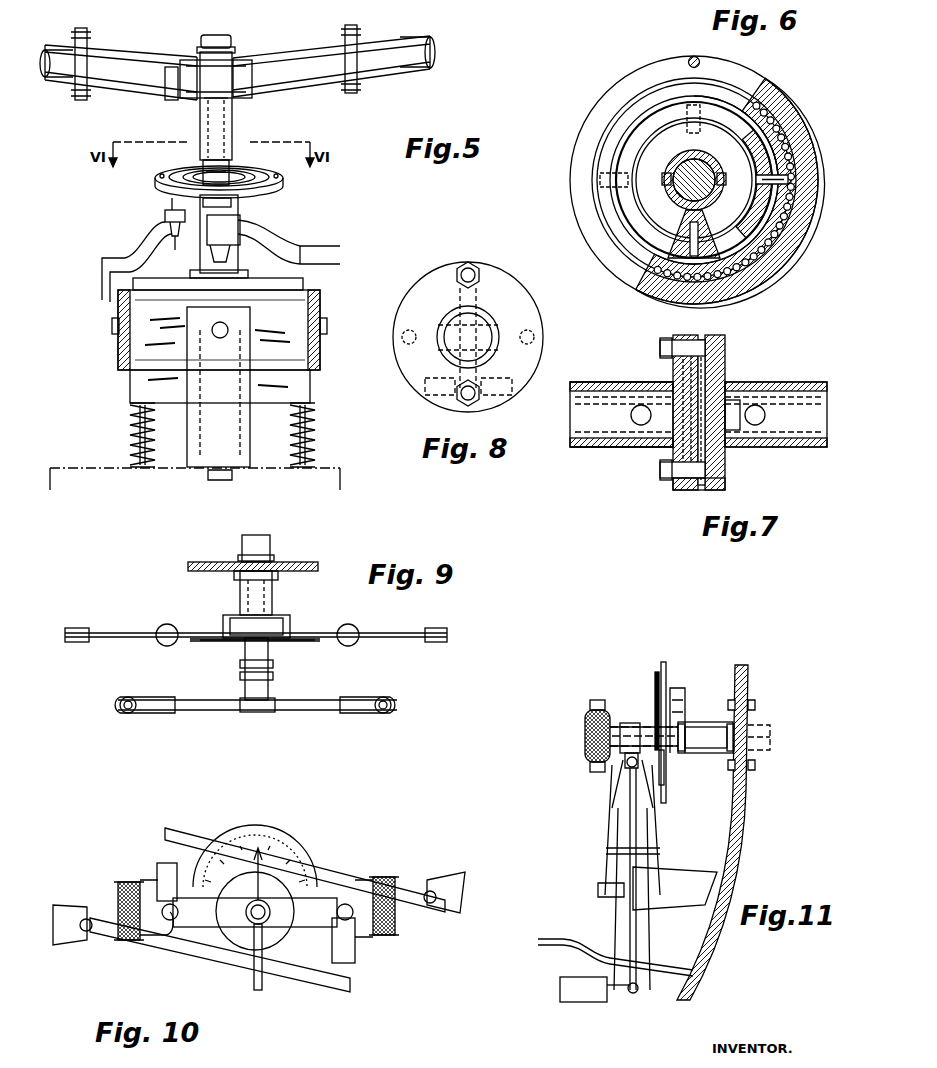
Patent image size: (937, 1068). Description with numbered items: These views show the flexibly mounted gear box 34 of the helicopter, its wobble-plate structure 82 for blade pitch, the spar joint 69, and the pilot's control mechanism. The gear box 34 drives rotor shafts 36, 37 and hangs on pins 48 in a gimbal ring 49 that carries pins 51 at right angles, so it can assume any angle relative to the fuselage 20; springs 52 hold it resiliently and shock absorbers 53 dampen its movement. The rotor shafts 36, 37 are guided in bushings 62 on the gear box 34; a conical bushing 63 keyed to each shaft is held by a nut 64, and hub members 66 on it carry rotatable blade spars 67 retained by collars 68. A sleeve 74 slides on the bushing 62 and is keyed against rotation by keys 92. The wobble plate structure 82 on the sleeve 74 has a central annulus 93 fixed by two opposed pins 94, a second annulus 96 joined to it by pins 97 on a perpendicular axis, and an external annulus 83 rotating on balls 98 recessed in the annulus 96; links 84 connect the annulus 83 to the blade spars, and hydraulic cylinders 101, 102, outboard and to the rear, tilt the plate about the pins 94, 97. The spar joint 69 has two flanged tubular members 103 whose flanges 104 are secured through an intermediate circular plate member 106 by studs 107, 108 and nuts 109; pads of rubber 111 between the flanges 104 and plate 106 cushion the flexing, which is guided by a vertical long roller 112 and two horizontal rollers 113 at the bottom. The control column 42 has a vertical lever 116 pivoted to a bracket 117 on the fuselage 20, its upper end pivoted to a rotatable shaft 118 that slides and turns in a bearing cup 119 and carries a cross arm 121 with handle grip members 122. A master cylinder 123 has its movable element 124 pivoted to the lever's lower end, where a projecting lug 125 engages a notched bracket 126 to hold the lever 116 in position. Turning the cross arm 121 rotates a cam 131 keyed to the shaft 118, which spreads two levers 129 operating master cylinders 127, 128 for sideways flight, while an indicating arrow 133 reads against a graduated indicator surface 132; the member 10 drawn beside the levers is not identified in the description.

In FIG. 9, the cross rod 10 is at (447, 635).
In FIG. 9, the fuselage 20 is at (312, 572).
In FIG. 10, the fuselage 20 is at (446, 884).
In FIG. 11, the fuselage 20 is at (750, 680).
In FIG. 5, the gear box 34 is at (318, 293).
In FIG. 6, the rotor shaft 36 is at (668, 176).
In FIG. 5, the rotor shaft 37 is at (238, 162).
In FIG. 10, the control column 42 is at (264, 988).
In FIG. 11, the control column 42 is at (620, 786).
In FIG. 5, the pins 48 is at (228, 330).
In FIG. 5, the gimbal ring 49 is at (322, 300).
In FIG. 5, the pins 51 is at (326, 322).
In FIG. 5, the springs 52 is at (158, 430).
In FIG. 5, the shock absorbers 53 is at (135, 438).
In FIG. 6, the bushings 62 is at (695, 150).
In FIG. 5, the conical bushing 63 is at (244, 62).
In FIG. 5, the nut 64 is at (233, 48).
In FIG. 5, the hub members 66 is at (118, 92).
In FIG. 5, the blade spars 67 is at (45, 78).
In FIG. 5, the collars 68 is at (78, 100).
In FIG. 7, the spar joint 69 is at (622, 450).
In FIG. 6, the sleeve 74 is at (770, 150).
In FIG. 5, the wobble plate structure 82 is at (283, 182).
In FIG. 6, the wobble plate structure 82 is at (636, 292).
In FIG. 5, the external annulus 83 is at (168, 184).
In FIG. 6, the external annulus 83 is at (590, 240).
In FIG. 5, the links 84 is at (222, 132).
In FIG. 6, the links 84 is at (694, 56).
In FIG. 6, the keys 92 is at (730, 170).
In FIG. 6, the central annulus 93 is at (730, 120).
In FIG. 6, the pins 94 is at (735, 92).
In FIG. 6, the second annulus 96 is at (600, 192).
In FIG. 6, the pins 97 is at (612, 180).
In FIG. 6, the balls 98 is at (785, 242).
In FIG. 5, the hydraulic cylinder 101 is at (240, 222).
In FIG. 5, the hydraulic cylinder 102 is at (165, 212).
In FIG. 7, the flanged tubular members 103 is at (628, 382).
In FIG. 7, the flanges 104 is at (680, 345).
In FIG. 7, the intermediate circular plate member 106 is at (713, 344).
In FIG. 8, the studs 107 is at (478, 270).
In FIG. 7, the studs 107 is at (662, 349).
In FIG. 8, the studs 108 is at (404, 341).
In FIG. 7, the studs 108 is at (745, 413).
In FIG. 7, the nuts 109 is at (728, 400).
In FIG. 7, the pads of rubber 111 is at (703, 338).
In FIG. 8, the long roller 112 is at (478, 300).
In FIG. 7, the long roller 112 is at (688, 438).
In FIG. 8, the rollers 113 is at (512, 385).
In FIG. 7, the rollers 113 is at (722, 466).
In FIG. 11, the vertical lever 116 is at (628, 905).
In FIG. 11, the bracket 117 is at (690, 880).
In FIG. 9, the rotatable shaft 118 is at (270, 690).
In FIG. 11, the rotatable shaft 118 is at (645, 723).
In FIG. 9, the bearing cup 119 is at (240, 594).
In FIG. 11, the bearing cup 119 is at (705, 723).
In FIG. 9, the cross arm 121 is at (320, 708).
In FIG. 10, the cross arm 121 is at (320, 920).
In FIG. 9, the handle grip members 122 is at (397, 701).
In FIG. 10, the handle grip members 122 is at (120, 932).
In FIG. 11, the master cylinder 123 is at (560, 1000).
In FIG. 11, the movable element 124 is at (630, 992).
In FIG. 11, the projecting lug 125 is at (638, 950).
In FIG. 11, the notched bracket 126 is at (565, 942).
In FIG. 9, the master cylinder 127 is at (167, 625).
In FIG. 10, the master cylinder 127 is at (160, 868).
In FIG. 9, the master cylinder 128 is at (352, 625).
In FIG. 10, the master cylinder 128 is at (357, 950).
In FIG. 9, the levers 129 is at (400, 632).
In FIG. 10, the levers 129 is at (335, 872).
In FIG. 11, the levers 129 is at (668, 665).
In FIG. 9, the cam 131 is at (290, 628).
In FIG. 10, the cam 131 is at (272, 950).
In FIG. 11, the cam 131 is at (680, 700).
In FIG. 9, the graduated indicator surface 132 is at (302, 641).
In FIG. 10, the graduated indicator surface 132 is at (262, 846).
In FIG. 11, the graduated indicator surface 132 is at (663, 665).
In FIG. 10, the indicating arrow 133 is at (275, 856).
In FIG. 11, the indicating arrow 133 is at (656, 680).